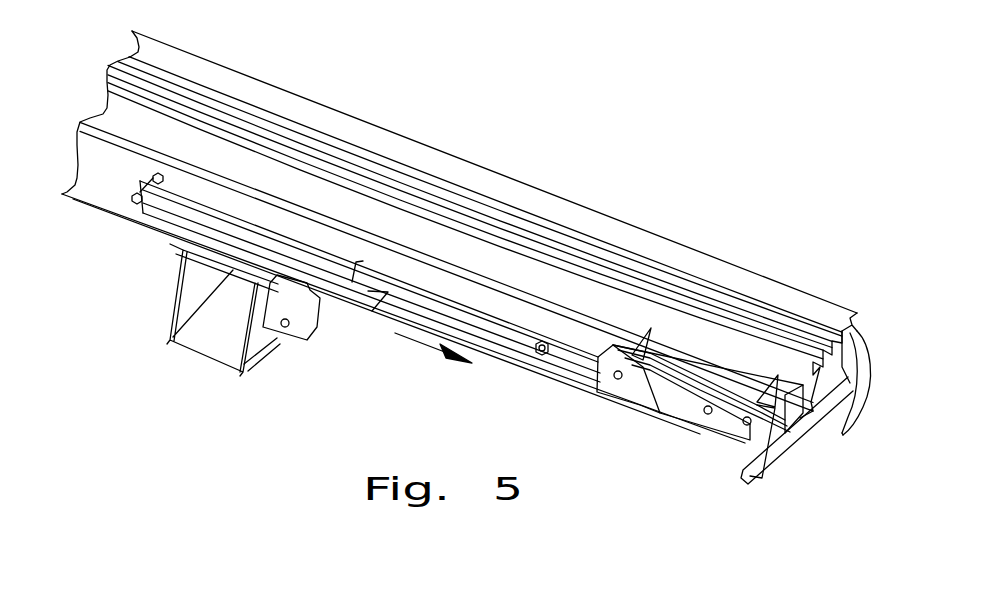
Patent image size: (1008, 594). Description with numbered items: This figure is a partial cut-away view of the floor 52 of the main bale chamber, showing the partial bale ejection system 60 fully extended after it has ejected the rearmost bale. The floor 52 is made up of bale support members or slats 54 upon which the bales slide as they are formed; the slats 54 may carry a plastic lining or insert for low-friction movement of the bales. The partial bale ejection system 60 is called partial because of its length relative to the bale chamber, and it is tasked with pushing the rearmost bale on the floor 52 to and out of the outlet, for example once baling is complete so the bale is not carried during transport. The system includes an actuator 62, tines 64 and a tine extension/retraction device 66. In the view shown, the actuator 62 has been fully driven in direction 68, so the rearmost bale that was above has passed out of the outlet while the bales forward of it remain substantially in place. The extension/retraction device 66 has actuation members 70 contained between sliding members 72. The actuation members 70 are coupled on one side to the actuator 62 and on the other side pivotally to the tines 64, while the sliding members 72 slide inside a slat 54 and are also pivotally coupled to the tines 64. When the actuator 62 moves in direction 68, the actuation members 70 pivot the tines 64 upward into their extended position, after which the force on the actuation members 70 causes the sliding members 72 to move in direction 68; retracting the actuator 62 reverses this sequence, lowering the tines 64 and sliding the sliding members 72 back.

The floor 52 is at (616, 190).
The bale support member 54 is at (843, 437).
The partial bale ejection system 60 is at (124, 237).
The actuator 62 is at (177, 210).
The tines 64 is at (663, 418).
The tine extension/retraction device 66 is at (595, 399).
The direction 68 is at (418, 345).
The actuation members 70 is at (560, 358).
The sliding members 72 is at (618, 383).